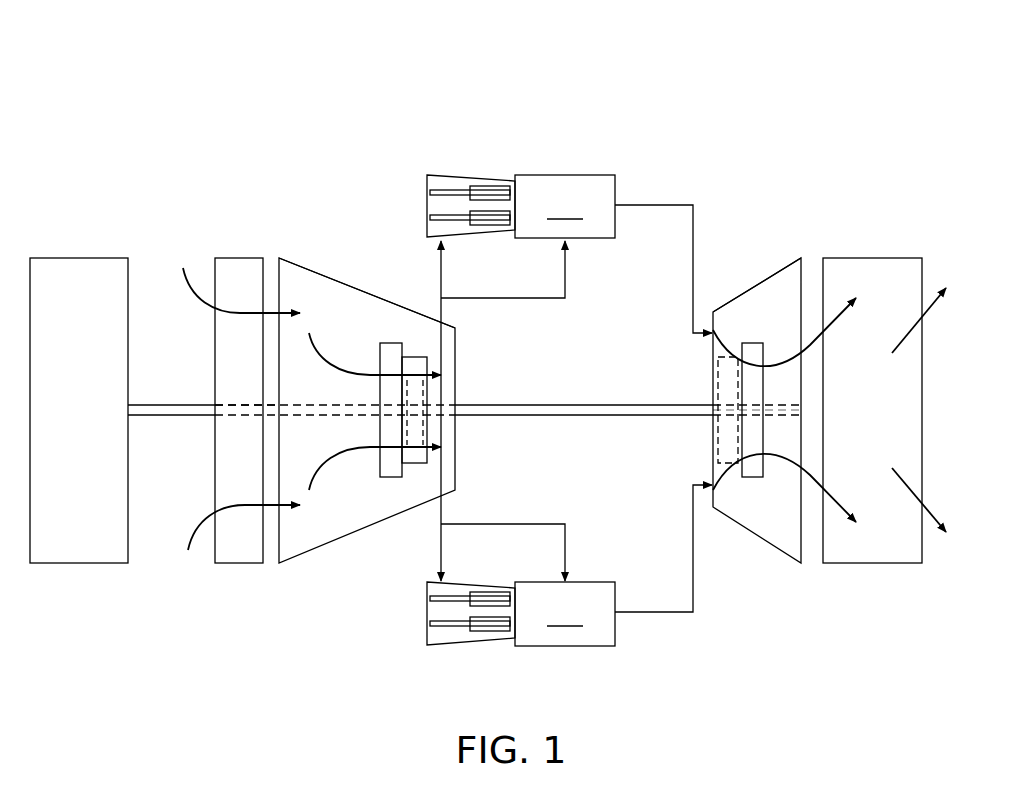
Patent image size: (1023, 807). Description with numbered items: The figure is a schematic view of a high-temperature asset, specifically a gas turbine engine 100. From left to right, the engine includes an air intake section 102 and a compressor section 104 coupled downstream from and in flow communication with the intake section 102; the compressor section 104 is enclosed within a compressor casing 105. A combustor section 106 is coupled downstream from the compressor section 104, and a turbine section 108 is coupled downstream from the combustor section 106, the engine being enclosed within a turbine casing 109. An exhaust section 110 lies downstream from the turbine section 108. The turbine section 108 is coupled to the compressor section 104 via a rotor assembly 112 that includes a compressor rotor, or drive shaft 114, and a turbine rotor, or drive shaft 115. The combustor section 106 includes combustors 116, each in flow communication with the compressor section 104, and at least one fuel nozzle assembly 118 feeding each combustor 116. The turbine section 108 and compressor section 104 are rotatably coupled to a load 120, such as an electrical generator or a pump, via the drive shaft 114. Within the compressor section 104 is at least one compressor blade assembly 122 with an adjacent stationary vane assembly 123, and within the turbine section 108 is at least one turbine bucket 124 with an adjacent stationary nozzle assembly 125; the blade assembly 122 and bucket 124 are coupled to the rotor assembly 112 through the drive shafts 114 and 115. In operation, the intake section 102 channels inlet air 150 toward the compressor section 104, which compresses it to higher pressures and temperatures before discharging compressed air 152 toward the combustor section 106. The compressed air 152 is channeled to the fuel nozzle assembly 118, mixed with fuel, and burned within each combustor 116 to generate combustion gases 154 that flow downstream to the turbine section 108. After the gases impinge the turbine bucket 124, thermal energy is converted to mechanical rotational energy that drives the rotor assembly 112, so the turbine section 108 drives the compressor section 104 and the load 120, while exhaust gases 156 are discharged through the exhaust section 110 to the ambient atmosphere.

The gas turbine engine 100 is at (172, 52).
The air intake section 102 is at (241, 258).
The compressor section 104 is at (290, 248).
The compressor casing 105 is at (360, 320).
The combustor section 106 is at (808, 164).
The turbine section 108 is at (777, 256).
The turbine casing 109 is at (724, 310).
The exhaust section 110 is at (873, 258).
The rotor assembly 112 is at (520, 395).
The compressor drive shaft 114 is at (313, 416).
The turbine drive shaft 115 is at (780, 420).
The combustor 116 is at (613, 410).
The fuel nozzle assembly 118 is at (471, 166).
The load 120 is at (80, 258).
The compressor blade assembly 122 is at (413, 466).
The stationary vane assembly 123 is at (388, 480).
The turbine bucket 124 is at (728, 466).
The stationary nozzle assembly 125 is at (755, 480).
The inlet air 150 is at (193, 298).
The compressed air 152 is at (335, 355).
The combustion gases 154 is at (813, 345).
The exhaust gases 156 is at (935, 320).